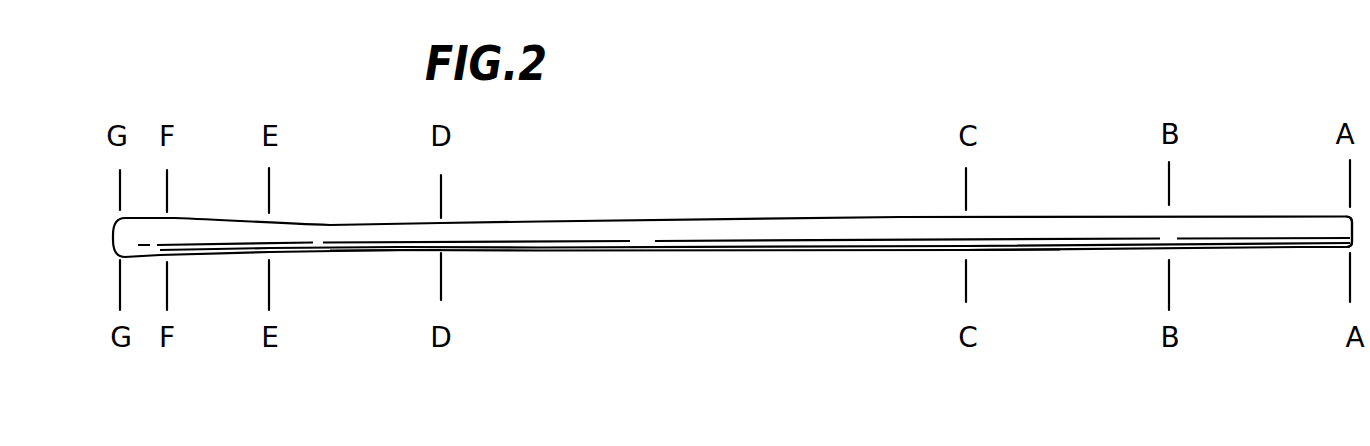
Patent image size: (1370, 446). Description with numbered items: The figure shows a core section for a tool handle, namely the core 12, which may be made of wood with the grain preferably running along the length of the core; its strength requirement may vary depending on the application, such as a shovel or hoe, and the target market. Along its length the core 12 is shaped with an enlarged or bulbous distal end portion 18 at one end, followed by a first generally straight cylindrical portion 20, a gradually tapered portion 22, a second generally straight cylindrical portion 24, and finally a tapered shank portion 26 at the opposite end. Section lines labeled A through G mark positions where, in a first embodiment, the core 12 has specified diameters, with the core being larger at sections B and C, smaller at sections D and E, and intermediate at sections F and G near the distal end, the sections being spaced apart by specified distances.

The core 12 is at (723, 181).
The enlarged or bulbous distal end portion 18 is at (128, 238).
The first generally straight cylindrical portion 20 is at (148, 228).
The gradually tapered portion 22 is at (403, 244).
The second generally straight cylindrical portion 24 is at (1018, 243).
The tapered shank portion 26 is at (1327, 224).